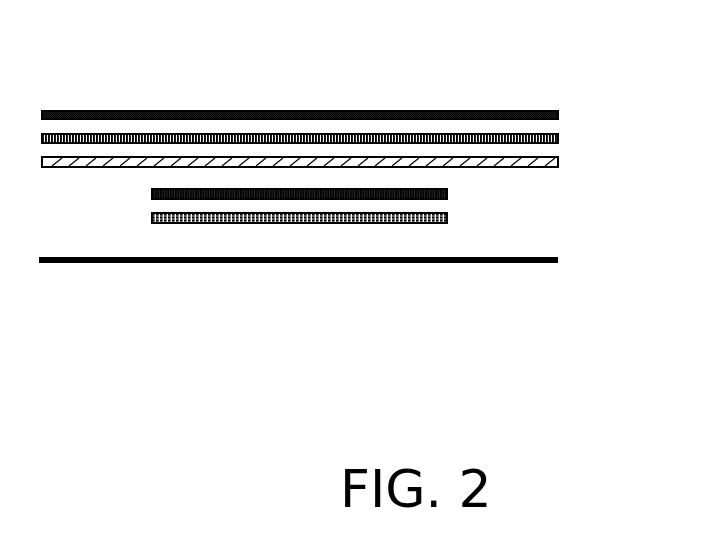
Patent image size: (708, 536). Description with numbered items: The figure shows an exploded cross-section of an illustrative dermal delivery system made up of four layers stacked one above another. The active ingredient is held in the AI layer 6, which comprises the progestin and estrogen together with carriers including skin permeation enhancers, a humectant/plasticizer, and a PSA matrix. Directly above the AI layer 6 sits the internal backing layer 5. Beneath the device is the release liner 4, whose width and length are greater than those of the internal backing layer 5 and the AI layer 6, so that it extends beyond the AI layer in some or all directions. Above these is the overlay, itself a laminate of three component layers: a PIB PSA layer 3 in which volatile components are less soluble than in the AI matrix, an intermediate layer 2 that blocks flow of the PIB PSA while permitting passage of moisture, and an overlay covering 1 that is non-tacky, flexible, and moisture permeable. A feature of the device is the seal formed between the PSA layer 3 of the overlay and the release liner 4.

The overlay covering 1 is at (484, 108).
The intermediate layer 2 is at (560, 140).
The PSA layer 3 is at (504, 170).
The release liner 4 is at (104, 264).
The internal backing layer 5 is at (150, 194).
The AI layer 6 is at (150, 218).